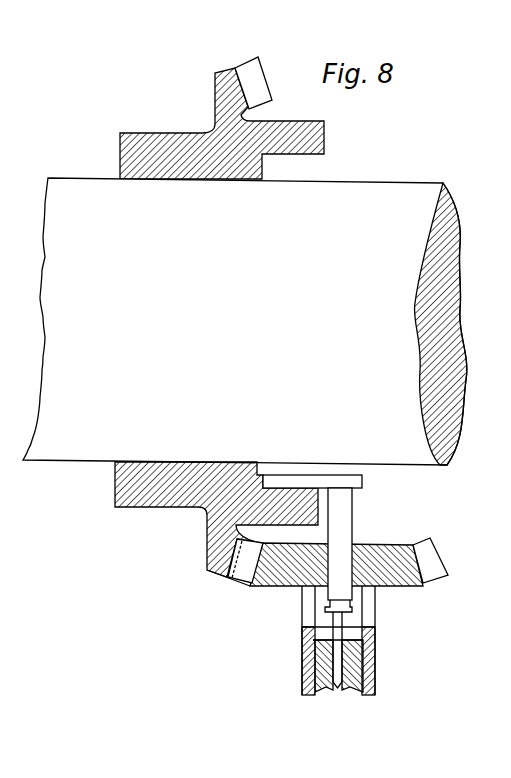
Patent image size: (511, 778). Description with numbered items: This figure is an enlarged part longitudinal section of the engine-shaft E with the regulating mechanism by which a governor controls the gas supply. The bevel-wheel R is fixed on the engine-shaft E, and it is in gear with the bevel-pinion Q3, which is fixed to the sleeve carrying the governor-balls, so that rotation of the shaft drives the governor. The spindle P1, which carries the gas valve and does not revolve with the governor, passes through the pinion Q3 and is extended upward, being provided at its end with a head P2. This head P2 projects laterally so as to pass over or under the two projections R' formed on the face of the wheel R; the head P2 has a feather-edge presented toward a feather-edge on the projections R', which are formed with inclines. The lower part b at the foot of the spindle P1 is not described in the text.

The engine-shaft E is at (245, 321).
The bevel-wheel R is at (206, 519).
The projections R' is at (222, 286).
The head P2 is at (325, 483).
The spindle P1 is at (338, 588).
The bevel-pinion Q3 is at (332, 562).
The socket / cup b is at (338, 640).